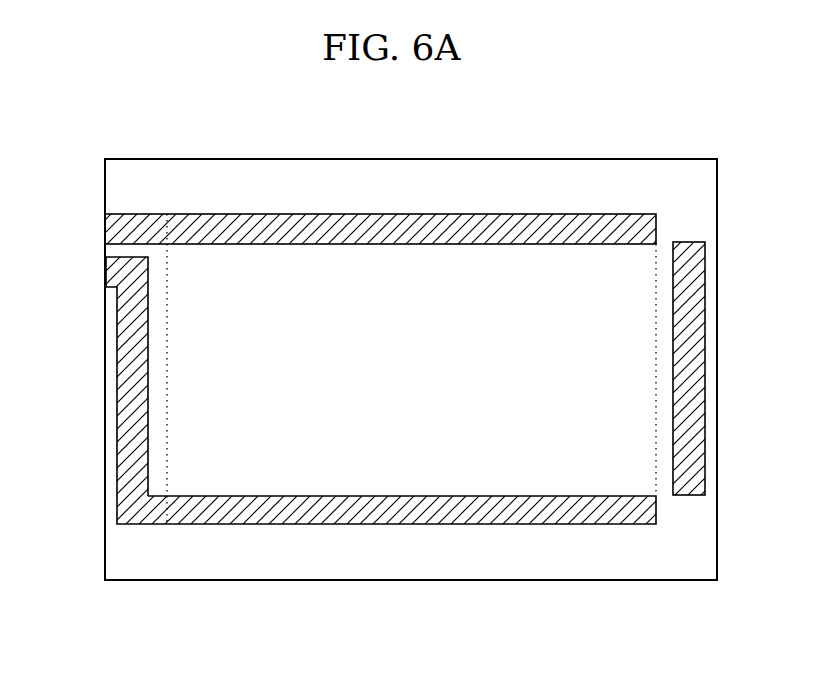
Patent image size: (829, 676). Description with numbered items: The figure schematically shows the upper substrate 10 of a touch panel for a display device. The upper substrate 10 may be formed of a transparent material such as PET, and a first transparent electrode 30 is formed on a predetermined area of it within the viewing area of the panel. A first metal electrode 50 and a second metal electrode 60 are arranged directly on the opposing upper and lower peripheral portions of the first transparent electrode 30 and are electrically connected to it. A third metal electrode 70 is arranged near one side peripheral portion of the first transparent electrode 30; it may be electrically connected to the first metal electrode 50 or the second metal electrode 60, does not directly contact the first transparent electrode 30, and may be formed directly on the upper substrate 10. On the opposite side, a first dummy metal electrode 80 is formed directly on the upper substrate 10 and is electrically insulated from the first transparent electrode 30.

The upper substrate 10 is at (707, 550).
The first transparent electrode 30 is at (548, 268).
The first metal electrode 50 is at (482, 228).
The second metal electrode 60 is at (483, 510).
The third metal electrode 70 is at (127, 282).
The first dummy metal electrode 80 is at (695, 303).